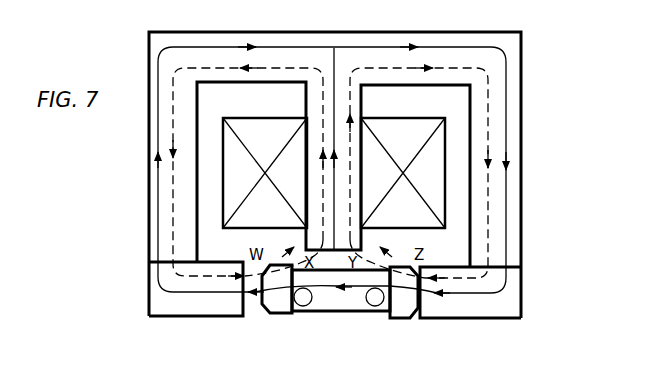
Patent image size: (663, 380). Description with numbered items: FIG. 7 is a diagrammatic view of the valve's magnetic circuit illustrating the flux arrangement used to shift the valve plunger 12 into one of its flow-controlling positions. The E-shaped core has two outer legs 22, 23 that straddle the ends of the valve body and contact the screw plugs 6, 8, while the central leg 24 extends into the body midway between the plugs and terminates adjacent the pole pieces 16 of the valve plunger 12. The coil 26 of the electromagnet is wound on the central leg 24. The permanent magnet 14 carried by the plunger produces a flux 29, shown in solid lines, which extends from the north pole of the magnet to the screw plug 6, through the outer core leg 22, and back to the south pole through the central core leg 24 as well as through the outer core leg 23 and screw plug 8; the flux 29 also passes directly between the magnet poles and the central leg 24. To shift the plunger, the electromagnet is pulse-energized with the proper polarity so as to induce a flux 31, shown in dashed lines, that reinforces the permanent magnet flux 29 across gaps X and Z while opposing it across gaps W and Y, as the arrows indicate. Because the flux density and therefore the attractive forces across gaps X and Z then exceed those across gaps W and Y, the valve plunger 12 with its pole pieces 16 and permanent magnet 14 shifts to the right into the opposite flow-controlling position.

The screw plug 6 is at (190, 320).
The screw plug 8 is at (470, 321).
The valve plunger 12 is at (340, 309).
The permanent magnet 14 is at (340, 313).
The pole pieces 16 is at (277, 316).
The outer leg 22 is at (152, 150).
The outer leg 23 is at (521, 150).
The central leg 24 is at (357, 104).
The coil 26 is at (262, 104).
The flux 29 is at (350, 48).
The flux 31 is at (174, 190).